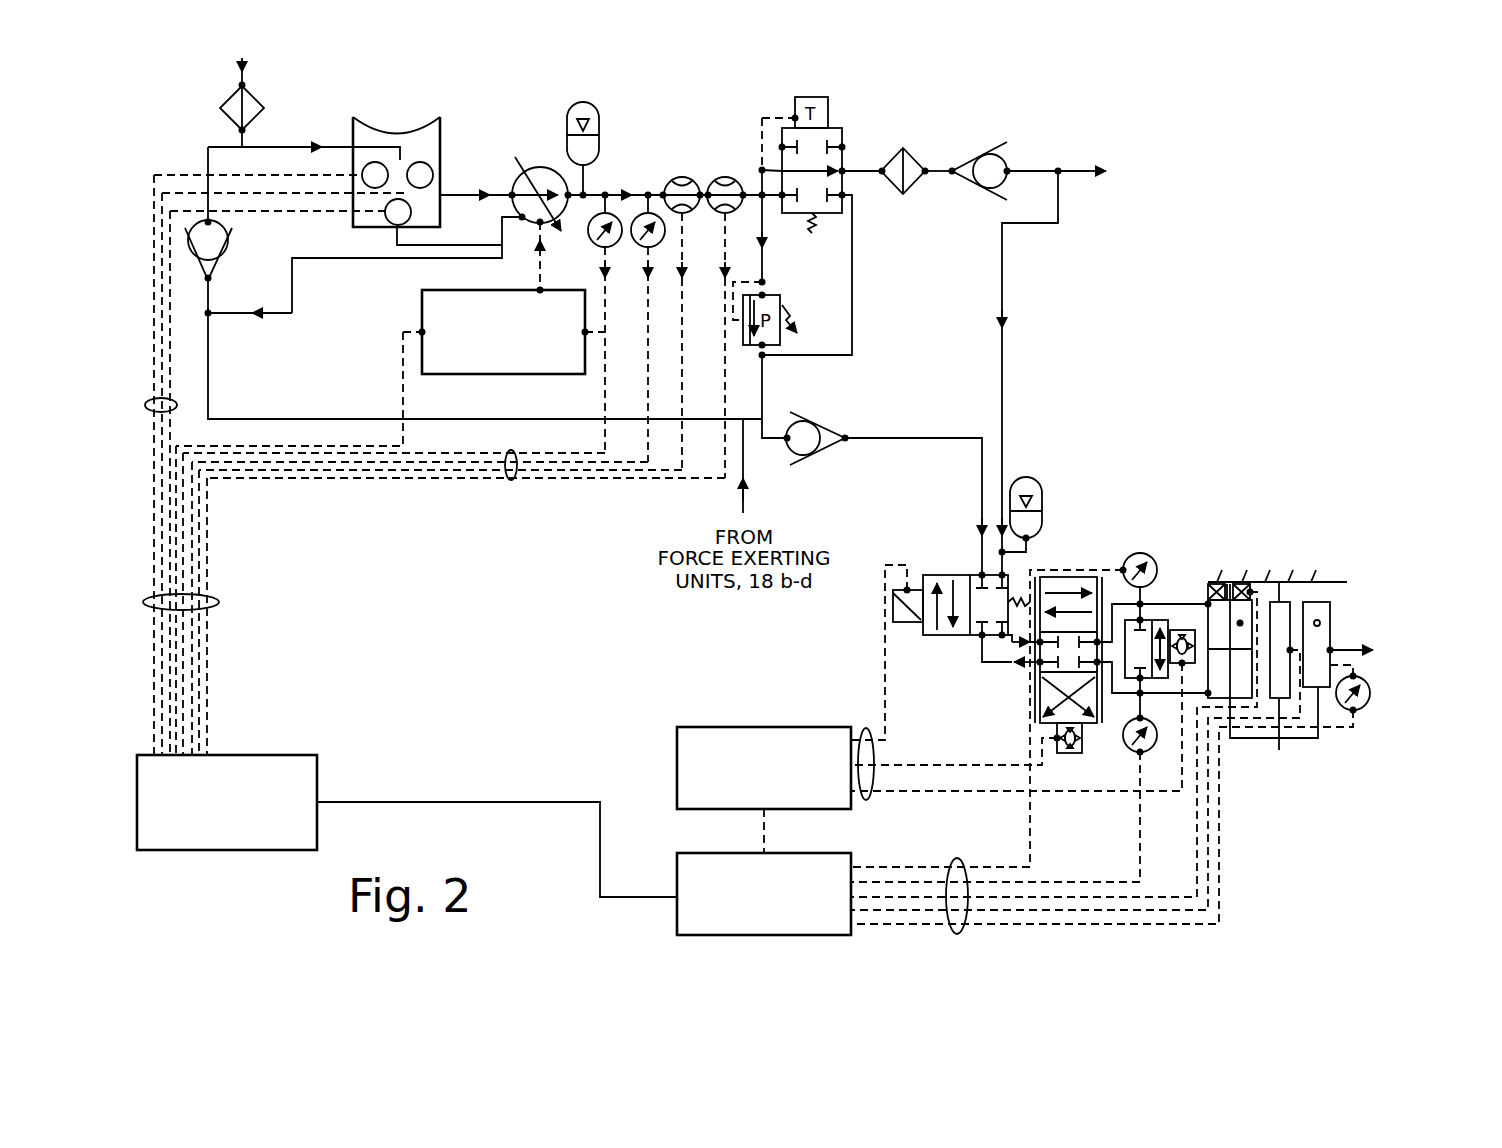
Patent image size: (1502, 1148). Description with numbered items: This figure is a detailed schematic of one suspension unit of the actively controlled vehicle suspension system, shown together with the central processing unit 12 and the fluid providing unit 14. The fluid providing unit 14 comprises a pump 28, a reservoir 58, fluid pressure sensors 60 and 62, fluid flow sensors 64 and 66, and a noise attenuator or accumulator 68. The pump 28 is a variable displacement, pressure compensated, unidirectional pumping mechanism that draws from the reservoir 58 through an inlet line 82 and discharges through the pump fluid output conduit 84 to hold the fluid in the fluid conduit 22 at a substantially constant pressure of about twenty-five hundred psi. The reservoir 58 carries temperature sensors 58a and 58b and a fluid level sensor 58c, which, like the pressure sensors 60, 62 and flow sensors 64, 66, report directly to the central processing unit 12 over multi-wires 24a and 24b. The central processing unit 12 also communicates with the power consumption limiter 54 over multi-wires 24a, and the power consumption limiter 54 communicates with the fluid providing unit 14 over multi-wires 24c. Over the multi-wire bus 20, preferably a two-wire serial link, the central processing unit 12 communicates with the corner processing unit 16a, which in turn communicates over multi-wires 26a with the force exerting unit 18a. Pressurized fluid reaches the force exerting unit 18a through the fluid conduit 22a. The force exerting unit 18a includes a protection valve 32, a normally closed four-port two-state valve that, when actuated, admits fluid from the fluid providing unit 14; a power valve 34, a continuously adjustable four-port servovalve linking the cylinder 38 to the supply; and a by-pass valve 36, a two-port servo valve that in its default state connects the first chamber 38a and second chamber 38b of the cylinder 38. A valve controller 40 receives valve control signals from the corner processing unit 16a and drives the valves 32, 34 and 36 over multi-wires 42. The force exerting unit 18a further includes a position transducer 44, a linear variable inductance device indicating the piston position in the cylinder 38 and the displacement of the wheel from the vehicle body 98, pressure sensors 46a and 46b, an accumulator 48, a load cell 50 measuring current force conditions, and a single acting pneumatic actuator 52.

The central processing unit 12 is at (280, 755).
The fluid providing unit 14 is at (555, 97).
The corner processing unit 16a is at (700, 853).
The force exerting unit 18a is at (1104, 483).
The multi-wire bus 20 is at (497, 802).
The fluid conduit 22 is at (1040, 170).
The fluid conduit 22a is at (880, 438).
The multi-wires 24a is at (400, 347).
The multi-wires 24b is at (172, 412).
The multi-wires 24c is at (538, 270).
The multi-wires 26a is at (766, 822).
The pump 28 is at (557, 177).
The protection valve 32 is at (943, 636).
The power valve 34 is at (1090, 724).
The by-pass valve 36 is at (1152, 649).
The cylinder 38 is at (1200, 597).
The first chamber 38a is at (1208, 639).
The second chamber 38b is at (1210, 682).
The valve controller 40 is at (738, 727).
The multi-wires 42 is at (872, 800).
The position transducer 44 is at (1290, 602).
The pressure sensor 46a is at (1128, 558).
The pressure sensor 46b is at (1155, 744).
The accumulator 48 is at (1042, 500).
The load cell 50 is at (1228, 582).
The single acting pneumatic actuator 52 is at (1332, 645).
The power consumption limiter 54 is at (444, 375).
The reservoir 58 is at (441, 130).
The temperature sensor 58a is at (373, 161).
The temperature sensor 58b is at (425, 164).
The fluid level sensor 58c is at (390, 224).
The fluid pressure sensor 60 is at (594, 243).
The fluid pressure sensor 62 is at (637, 240).
The fluid flow sensor 64 is at (672, 180).
The fluid flow sensor 66 is at (727, 178).
The accumulator 68 is at (598, 142).
The suction line 82 is at (452, 207).
The pump fluid output conduit 84 is at (592, 193).
The vehicle body 98 is at (1275, 582).